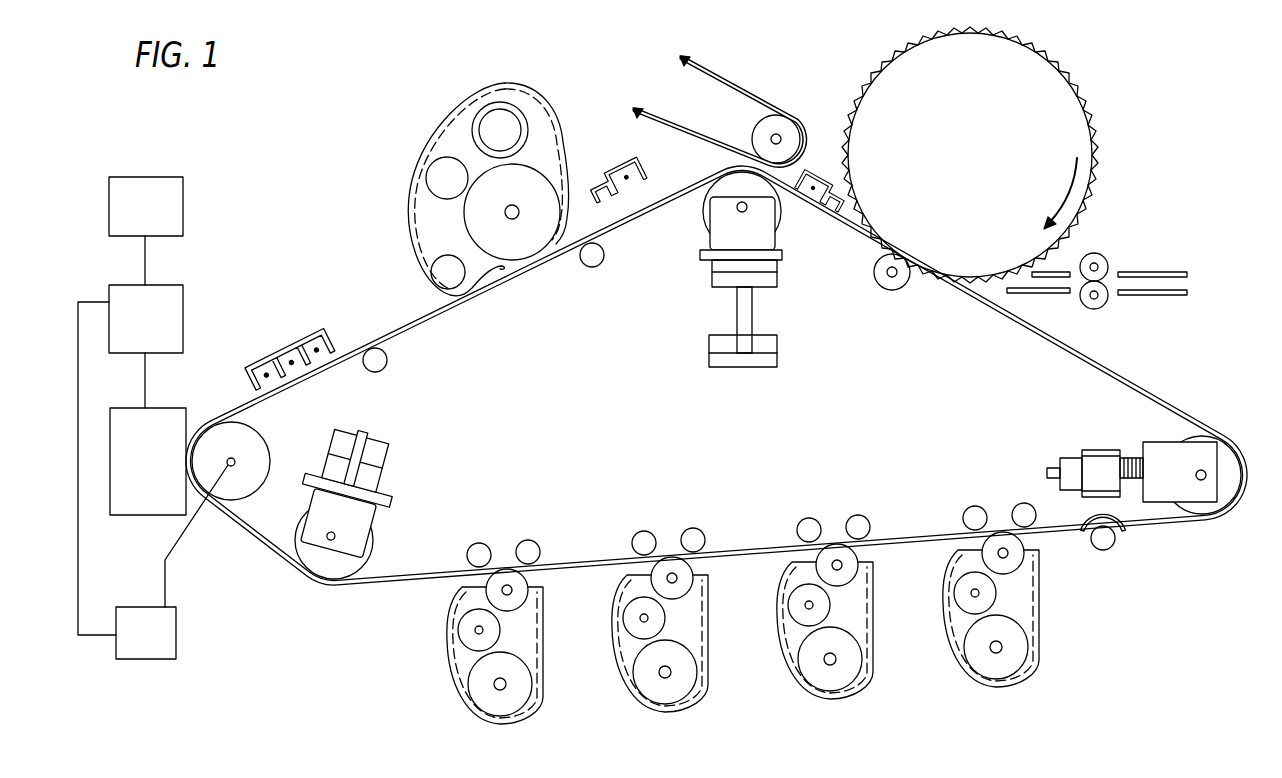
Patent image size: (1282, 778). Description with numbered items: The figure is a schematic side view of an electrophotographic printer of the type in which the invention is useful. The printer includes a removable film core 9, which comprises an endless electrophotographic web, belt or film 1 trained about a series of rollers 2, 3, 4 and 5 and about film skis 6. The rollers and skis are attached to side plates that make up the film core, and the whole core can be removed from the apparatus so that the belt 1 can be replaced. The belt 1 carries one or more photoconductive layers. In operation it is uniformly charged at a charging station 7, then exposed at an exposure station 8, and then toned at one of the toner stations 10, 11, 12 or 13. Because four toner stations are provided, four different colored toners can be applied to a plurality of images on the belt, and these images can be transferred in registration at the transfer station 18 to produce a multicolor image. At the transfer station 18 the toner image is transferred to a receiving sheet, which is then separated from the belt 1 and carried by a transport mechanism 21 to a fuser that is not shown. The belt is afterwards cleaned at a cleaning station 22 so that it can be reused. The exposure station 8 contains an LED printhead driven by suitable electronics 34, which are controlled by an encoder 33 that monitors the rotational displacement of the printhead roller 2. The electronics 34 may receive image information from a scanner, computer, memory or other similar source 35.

The endless electrophotographic web, belt or film 1 is at (412, 578).
The printhead roller 2 is at (218, 437).
The roller 3 is at (318, 566).
The roller 4 is at (1232, 468).
The roller 5 is at (730, 186).
The film skis 6 is at (383, 371).
The charging station 7 is at (286, 346).
The exposure station 8 is at (114, 410).
The removable film core 9 is at (1241, 530).
The toner station 10 is at (543, 680).
The toner station 11 is at (684, 634).
The toner station 12 is at (849, 621).
The toner station 13 is at (1015, 609).
The transfer station 18 is at (1082, 115).
The transport mechanism 21 is at (688, 128).
The cleaning station 22 is at (590, 172).
The encoder 33 is at (158, 660).
The electronics 34 is at (183, 297).
The source 35 is at (183, 193).